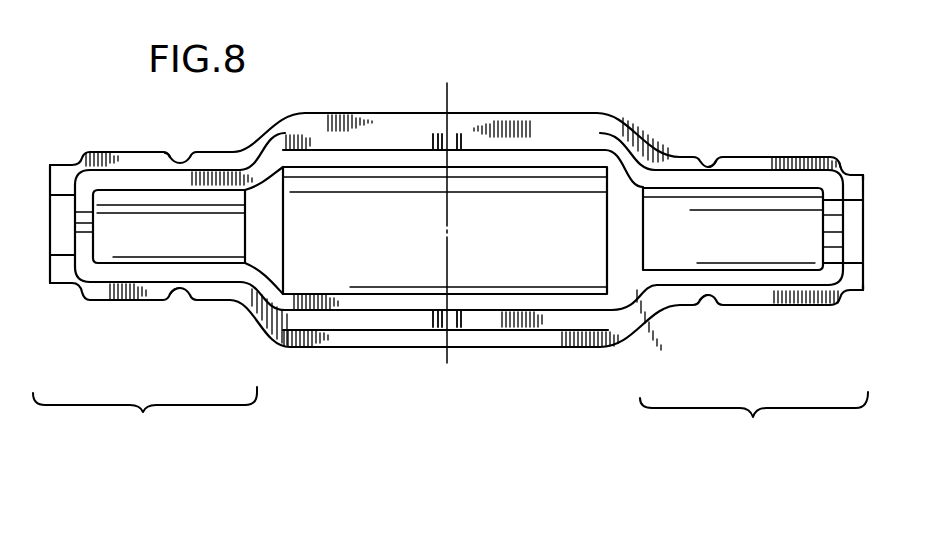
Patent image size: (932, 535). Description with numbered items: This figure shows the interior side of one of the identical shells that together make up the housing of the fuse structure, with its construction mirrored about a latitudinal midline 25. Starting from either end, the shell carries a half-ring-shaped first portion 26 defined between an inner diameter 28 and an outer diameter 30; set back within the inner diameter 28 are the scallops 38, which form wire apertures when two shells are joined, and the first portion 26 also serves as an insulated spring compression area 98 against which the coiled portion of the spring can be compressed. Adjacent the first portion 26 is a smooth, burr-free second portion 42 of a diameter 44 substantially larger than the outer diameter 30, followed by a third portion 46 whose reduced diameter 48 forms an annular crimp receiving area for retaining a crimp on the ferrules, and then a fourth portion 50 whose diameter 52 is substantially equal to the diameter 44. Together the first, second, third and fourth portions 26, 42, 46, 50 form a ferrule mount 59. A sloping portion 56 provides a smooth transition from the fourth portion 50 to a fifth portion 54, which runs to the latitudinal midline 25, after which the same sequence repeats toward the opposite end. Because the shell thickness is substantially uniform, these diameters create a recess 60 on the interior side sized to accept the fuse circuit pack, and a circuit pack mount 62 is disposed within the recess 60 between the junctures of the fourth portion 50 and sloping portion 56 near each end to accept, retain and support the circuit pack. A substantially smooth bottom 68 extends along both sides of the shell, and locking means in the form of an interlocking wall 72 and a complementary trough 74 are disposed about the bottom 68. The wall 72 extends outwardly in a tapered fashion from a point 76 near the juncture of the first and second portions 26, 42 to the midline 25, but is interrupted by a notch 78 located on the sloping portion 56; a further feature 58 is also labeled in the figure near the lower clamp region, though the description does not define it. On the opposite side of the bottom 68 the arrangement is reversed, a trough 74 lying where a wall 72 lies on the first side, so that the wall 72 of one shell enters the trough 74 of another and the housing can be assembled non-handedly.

The latitudinal midline 25 is at (450, 103).
The first portion 26 is at (853, 178).
The inner diameter 28 is at (50, 203).
The outer diameter 30 is at (60, 163).
The scallops 38 is at (72, 224).
The second portion 42 is at (105, 152).
The diameter 44 is at (150, 152).
The third portion 46 is at (178, 161).
The diameter 48 is at (175, 292).
The fourth portion 50 is at (233, 304).
The diameter 52 is at (662, 152).
The fifth portion 54 is at (523, 126).
The sloping portion 56 is at (268, 133).
The lower clamp 58 is at (437, 333).
The ferrule mount 59 is at (450, 417).
The recess 60 is at (458, 230).
The circuit pack mount 62 is at (283, 335).
The bottom 68 is at (608, 128).
The interlocking wall 72 is at (325, 133).
The trough 74 is at (565, 143).
The point 76 is at (437, 147).
The notch 78 is at (270, 158).
The insulated spring compression area 98 is at (50, 273).